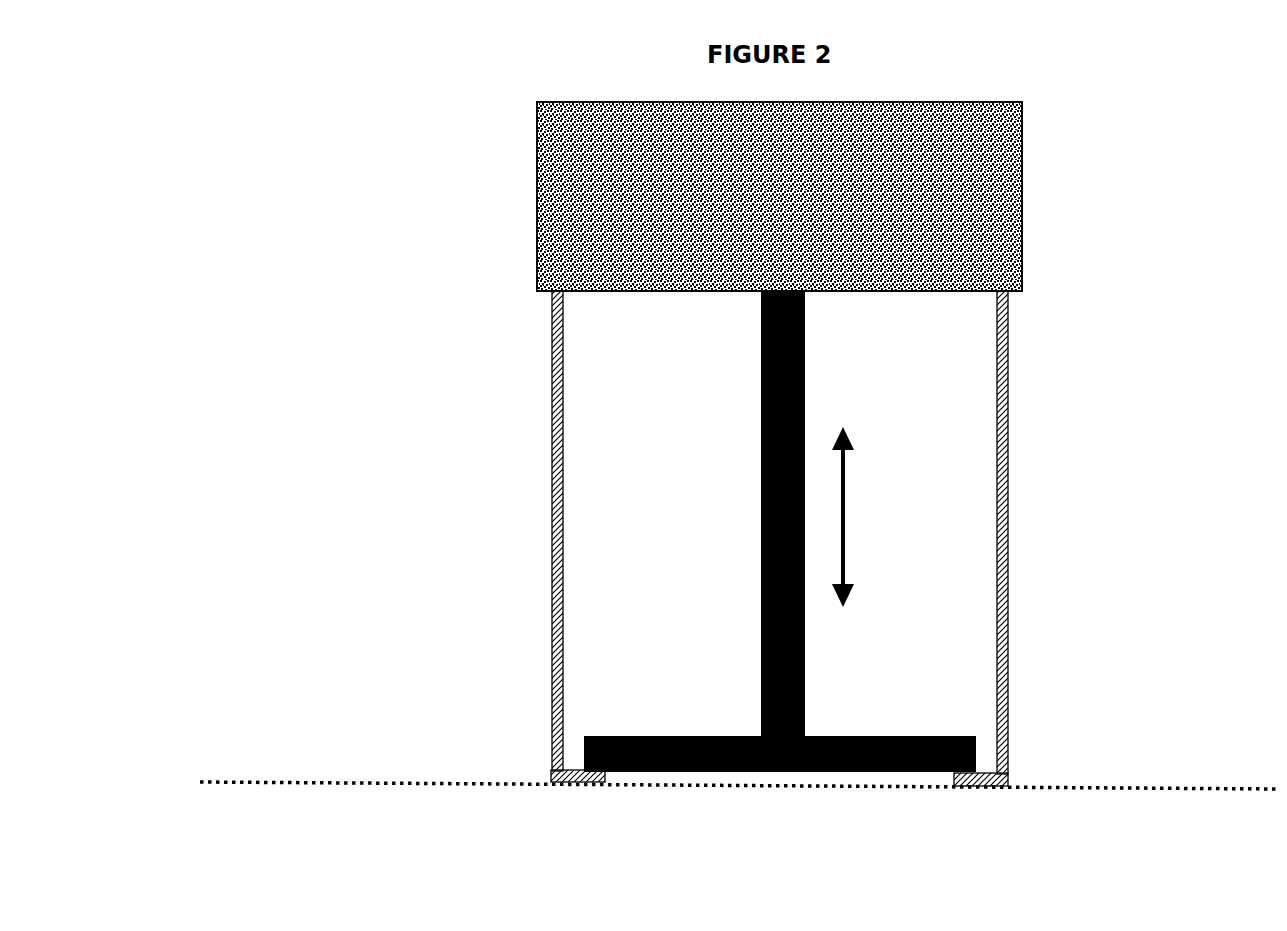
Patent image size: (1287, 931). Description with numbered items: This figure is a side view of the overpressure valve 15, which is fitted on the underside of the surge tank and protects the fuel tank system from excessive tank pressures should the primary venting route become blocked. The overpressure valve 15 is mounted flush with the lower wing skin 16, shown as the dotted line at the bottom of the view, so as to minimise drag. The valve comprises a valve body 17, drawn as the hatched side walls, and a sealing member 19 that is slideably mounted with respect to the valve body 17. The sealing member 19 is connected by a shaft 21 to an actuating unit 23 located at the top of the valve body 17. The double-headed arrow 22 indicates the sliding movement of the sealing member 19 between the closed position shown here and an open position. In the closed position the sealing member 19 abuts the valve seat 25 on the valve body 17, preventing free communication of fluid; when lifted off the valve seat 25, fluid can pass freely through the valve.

The overpressure valve 15 is at (444, 195).
The lower wing skin 16 is at (389, 786).
The valve body 17 is at (1012, 406).
The sealing member 19 is at (839, 773).
The shaft 21 is at (760, 520).
The direction of movement 22 is at (934, 518).
The actuating unit 23 is at (637, 195).
The valve seat 25 is at (573, 783).